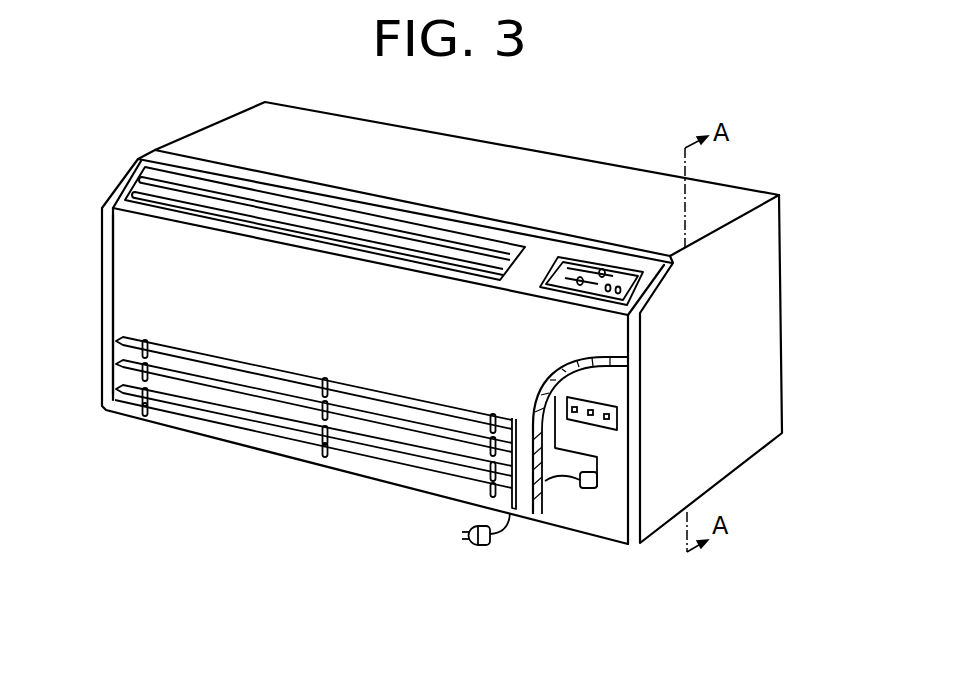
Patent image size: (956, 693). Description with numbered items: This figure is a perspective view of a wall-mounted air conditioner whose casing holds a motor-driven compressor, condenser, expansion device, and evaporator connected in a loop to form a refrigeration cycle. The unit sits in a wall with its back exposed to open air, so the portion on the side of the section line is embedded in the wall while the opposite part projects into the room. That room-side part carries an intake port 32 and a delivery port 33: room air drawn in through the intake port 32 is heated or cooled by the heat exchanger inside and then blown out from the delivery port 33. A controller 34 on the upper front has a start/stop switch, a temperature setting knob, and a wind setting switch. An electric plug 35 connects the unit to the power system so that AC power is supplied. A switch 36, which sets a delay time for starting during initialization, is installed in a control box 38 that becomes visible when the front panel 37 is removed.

The intake port 32 is at (277, 412).
The delivery port 33 is at (450, 227).
The controller 34 is at (563, 253).
The electric plug 35 is at (465, 536).
The switch 36 is at (582, 423).
The front panel 37 is at (393, 377).
The control box 38 is at (613, 510).